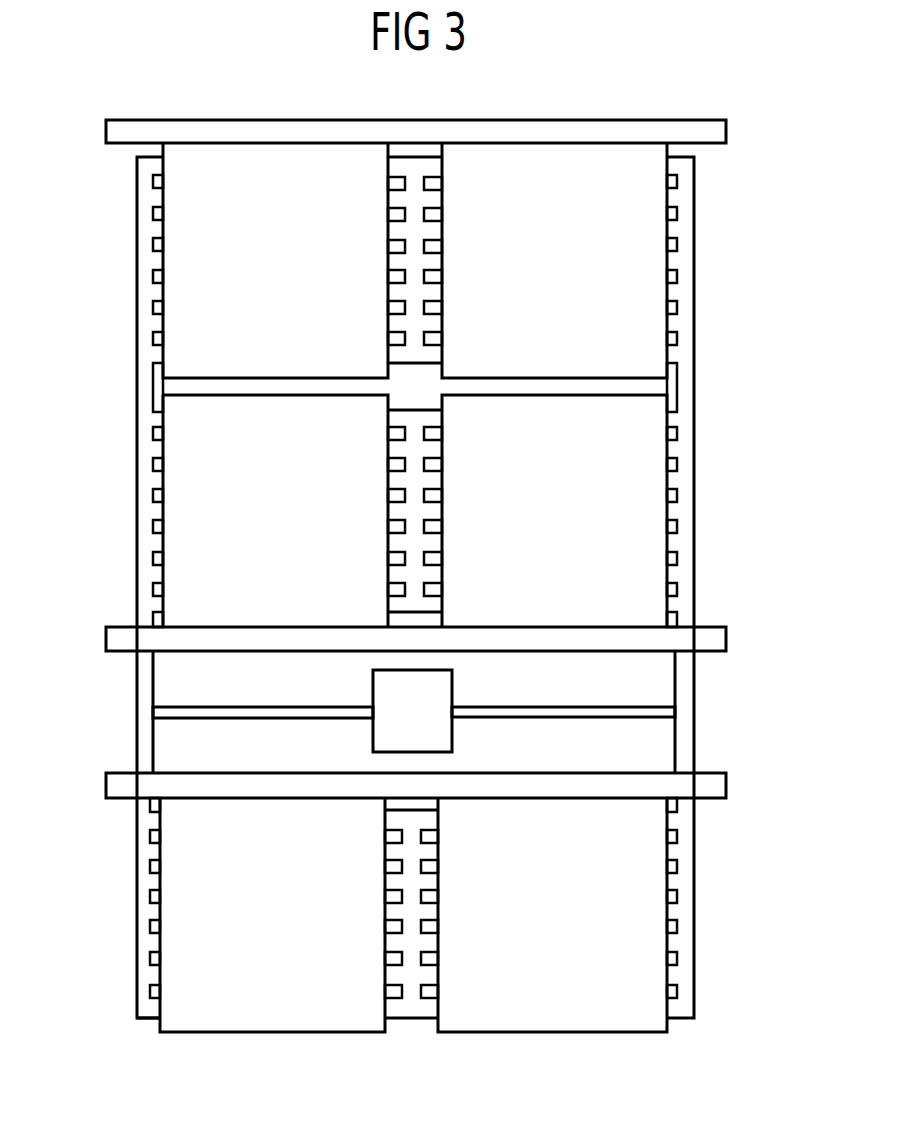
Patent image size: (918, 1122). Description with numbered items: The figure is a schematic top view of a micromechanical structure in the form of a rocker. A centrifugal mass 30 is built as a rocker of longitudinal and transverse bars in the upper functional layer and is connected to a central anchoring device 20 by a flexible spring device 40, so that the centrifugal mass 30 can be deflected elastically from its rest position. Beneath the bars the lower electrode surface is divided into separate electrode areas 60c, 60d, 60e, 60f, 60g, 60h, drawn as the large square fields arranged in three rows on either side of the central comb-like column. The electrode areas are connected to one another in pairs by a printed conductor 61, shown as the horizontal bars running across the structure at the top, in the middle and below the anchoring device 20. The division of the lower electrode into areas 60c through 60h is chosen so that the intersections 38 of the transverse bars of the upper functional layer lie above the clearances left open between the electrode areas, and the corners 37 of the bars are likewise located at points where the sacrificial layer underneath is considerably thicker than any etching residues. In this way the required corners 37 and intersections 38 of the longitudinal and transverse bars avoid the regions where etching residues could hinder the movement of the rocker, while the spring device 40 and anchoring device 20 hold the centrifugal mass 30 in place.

The printed conductor 61 is at (710, 132).
The centrifugal mass 30 is at (683, 201).
The electrode area 60c is at (175, 255).
The electrode area 60d is at (656, 293).
The electrode area 60e is at (658, 421).
The electrode area 60f is at (175, 476).
The electrode area 60g is at (657, 913).
The electrode area 60h is at (175, 881).
The flexible spring device 40 is at (168, 710).
The anchoring device 20 is at (452, 743).
The intersections 38 is at (412, 973).
The corners 37 is at (143, 1007).